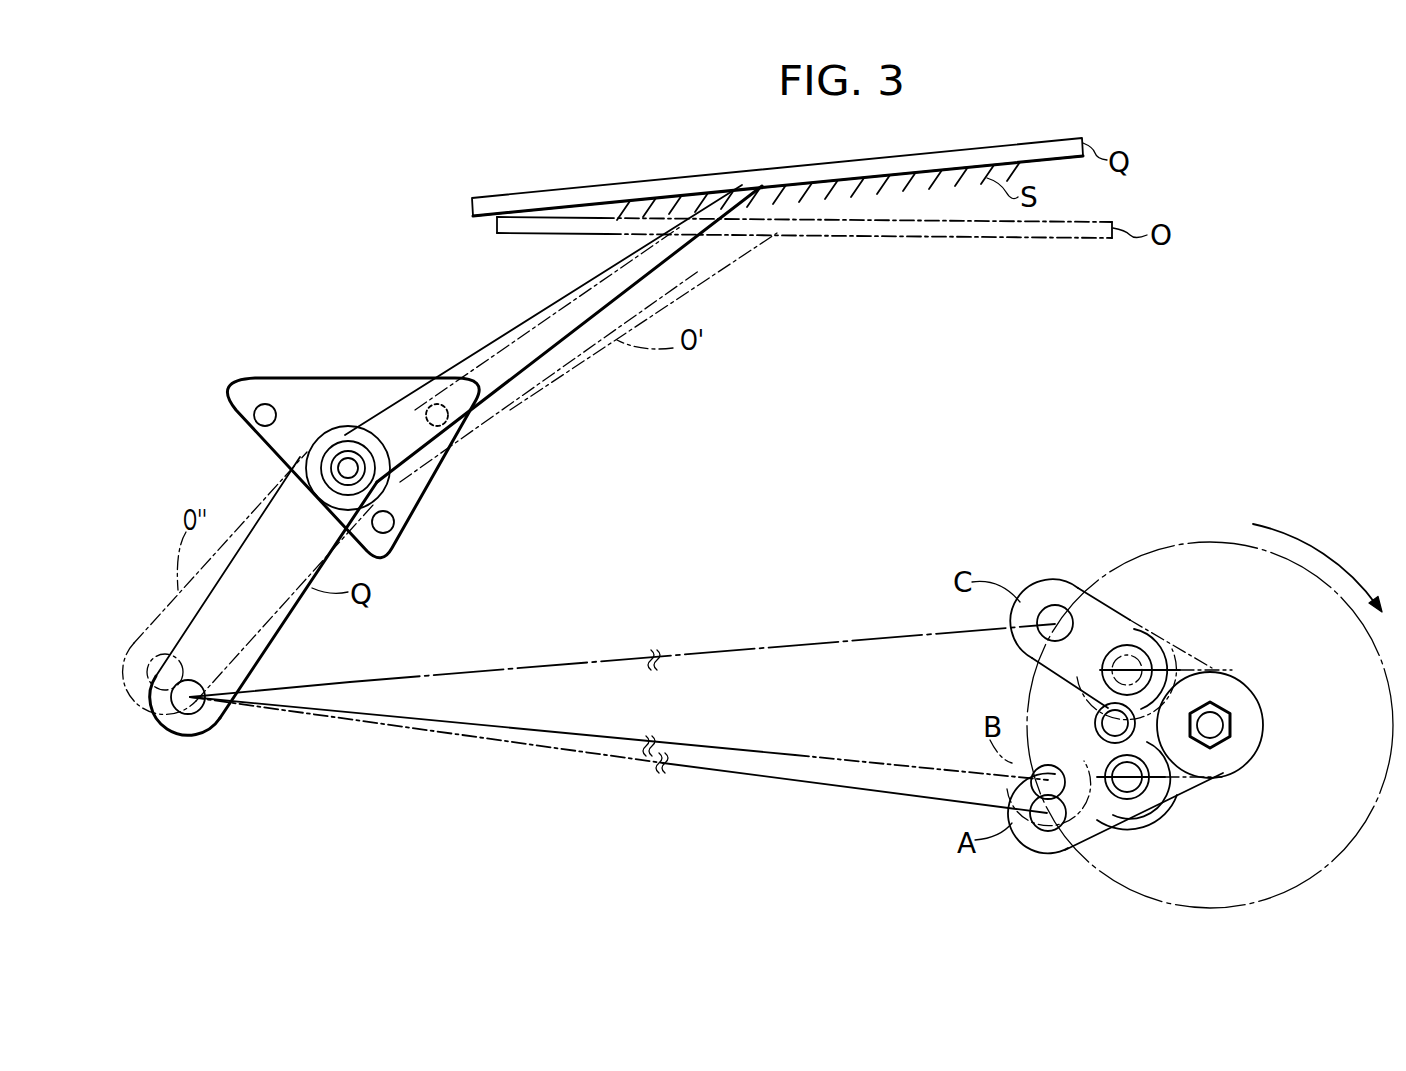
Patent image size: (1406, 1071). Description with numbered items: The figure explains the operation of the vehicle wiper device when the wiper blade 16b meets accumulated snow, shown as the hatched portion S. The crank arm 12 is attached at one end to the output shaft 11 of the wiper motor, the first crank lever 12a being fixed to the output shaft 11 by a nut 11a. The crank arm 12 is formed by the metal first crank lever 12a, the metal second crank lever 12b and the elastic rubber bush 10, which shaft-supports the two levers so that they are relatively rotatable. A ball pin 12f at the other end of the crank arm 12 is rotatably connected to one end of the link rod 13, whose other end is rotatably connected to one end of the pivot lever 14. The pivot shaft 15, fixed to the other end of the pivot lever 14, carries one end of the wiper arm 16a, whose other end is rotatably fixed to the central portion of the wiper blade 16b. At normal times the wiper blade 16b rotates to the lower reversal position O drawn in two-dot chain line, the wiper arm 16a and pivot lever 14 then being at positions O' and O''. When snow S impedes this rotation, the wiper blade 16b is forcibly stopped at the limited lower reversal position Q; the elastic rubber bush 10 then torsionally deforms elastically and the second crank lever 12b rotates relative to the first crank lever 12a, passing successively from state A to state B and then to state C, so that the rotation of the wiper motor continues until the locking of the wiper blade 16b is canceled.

The elastic rubber bush 10 is at (1132, 793).
The output shaft 11 is at (1212, 710).
The nut 11a is at (1223, 710).
The crank arm 12 is at (1160, 835).
The first crank lever 12a is at (1183, 790).
The second crank lever 12b is at (1087, 838).
The ball pin 12f is at (1035, 843).
The link rod 13 is at (720, 772).
The pivot lever 14 is at (283, 640).
The pivot shaft 15 is at (343, 463).
The wiper arm 16a is at (547, 306).
The wiper blade 16b is at (710, 173).